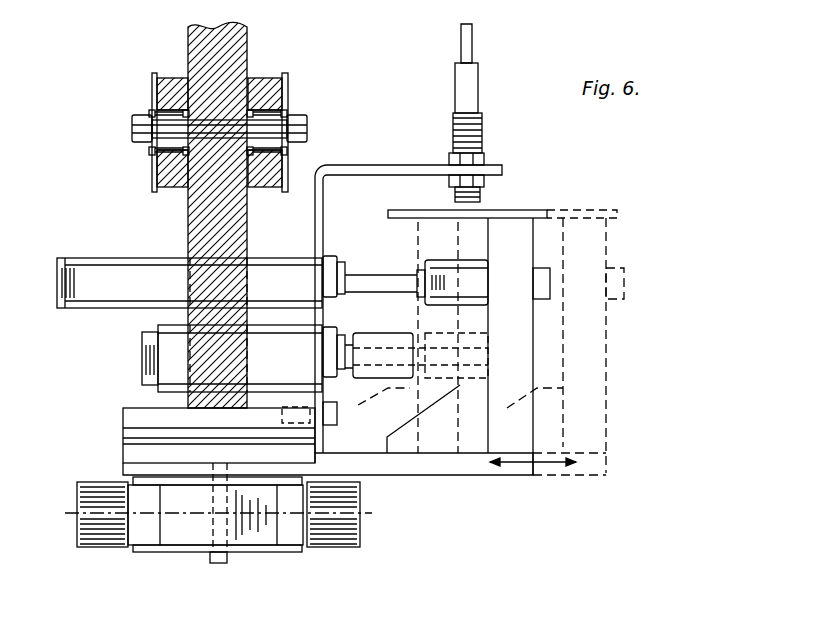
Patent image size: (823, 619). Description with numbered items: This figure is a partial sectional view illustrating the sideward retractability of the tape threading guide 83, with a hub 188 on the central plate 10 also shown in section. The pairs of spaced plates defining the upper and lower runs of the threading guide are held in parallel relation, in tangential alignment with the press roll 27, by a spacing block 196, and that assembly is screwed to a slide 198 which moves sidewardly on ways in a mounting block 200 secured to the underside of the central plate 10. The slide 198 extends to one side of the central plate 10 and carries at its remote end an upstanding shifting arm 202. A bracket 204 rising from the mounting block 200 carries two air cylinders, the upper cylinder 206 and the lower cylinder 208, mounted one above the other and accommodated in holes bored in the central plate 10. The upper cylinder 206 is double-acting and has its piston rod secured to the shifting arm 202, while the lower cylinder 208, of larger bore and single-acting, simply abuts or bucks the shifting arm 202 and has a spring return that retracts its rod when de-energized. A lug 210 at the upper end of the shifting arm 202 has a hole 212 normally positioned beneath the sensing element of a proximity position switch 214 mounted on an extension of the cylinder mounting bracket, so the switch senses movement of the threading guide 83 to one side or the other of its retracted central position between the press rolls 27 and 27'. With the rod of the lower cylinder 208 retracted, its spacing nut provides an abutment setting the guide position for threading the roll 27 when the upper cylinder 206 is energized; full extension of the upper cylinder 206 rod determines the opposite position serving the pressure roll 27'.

The central plate 10 is at (240, 42).
The hub 188 is at (168, 80).
The bracket 204 is at (324, 237).
The proximity position switch 214 is at (470, 128).
The lug 210 is at (406, 210).
The shifting arm 202 is at (517, 230).
The hole 212 is at (464, 219).
The upper cylinder 206 is at (147, 282).
The lower cylinder 208 is at (315, 358).
The mounting block 200 is at (134, 414).
The slide 198 is at (337, 465).
The spacing block 196 is at (200, 525).
The press roll 27 is at (76, 527).
The press roll 27' is at (364, 514).
The threading guide 83 is at (195, 560).